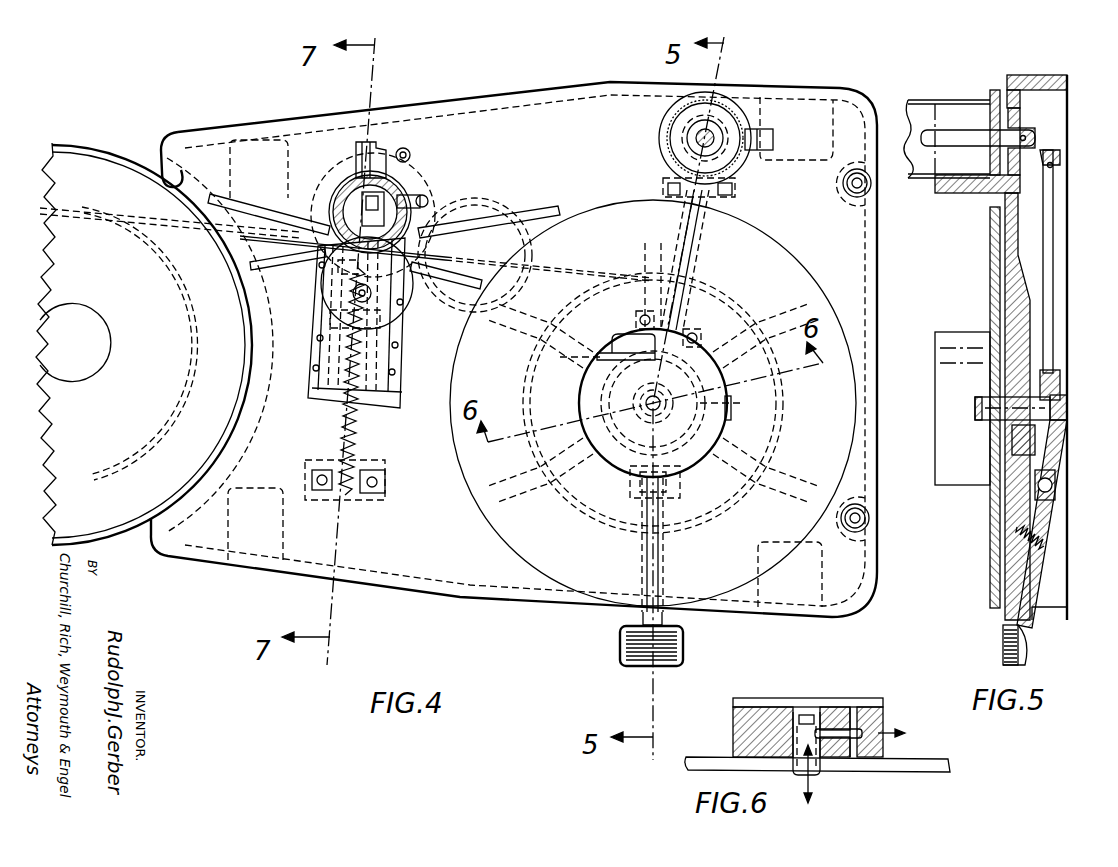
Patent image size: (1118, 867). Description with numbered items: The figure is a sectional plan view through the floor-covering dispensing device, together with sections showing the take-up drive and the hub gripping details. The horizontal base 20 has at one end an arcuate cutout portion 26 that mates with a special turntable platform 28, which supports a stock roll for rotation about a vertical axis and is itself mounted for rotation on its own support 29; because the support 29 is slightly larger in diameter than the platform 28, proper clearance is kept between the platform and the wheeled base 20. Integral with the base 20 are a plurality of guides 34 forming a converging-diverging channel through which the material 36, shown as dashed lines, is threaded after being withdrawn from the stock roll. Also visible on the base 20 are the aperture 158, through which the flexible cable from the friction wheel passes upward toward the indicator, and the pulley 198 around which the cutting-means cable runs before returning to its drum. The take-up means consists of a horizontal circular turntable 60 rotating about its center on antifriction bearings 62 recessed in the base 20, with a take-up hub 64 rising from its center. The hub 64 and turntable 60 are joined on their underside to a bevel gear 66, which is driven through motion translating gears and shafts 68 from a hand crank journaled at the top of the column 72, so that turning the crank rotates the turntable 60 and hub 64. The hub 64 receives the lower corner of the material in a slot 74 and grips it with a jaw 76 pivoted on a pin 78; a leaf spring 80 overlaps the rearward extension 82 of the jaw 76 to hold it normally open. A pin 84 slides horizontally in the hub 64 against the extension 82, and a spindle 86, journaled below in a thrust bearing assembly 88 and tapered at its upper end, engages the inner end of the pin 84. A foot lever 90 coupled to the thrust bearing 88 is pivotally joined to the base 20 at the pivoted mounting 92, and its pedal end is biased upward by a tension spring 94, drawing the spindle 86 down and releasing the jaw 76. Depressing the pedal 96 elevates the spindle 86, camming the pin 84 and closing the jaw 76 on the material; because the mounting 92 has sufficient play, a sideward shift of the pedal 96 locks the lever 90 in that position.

In FIG. 4, the base 20 is at (200, 563).
In FIG. 4, the arcuate cutout portion 26 is at (165, 176).
In FIG. 4, the platform 28 is at (112, 153).
In FIG. 4, the support 29 is at (88, 146).
In FIG. 4, the guides 34 is at (241, 203).
In FIG. 4, the material 36 is at (214, 232).
In FIG. 4, the aperture 158 is at (428, 196).
In FIG. 4, the pulley 198 is at (410, 164).
In FIG. 4, the turntable 60 is at (753, 250).
In FIG. 5, the turntable 60 is at (990, 565).
In FIG. 6, the turntable 60 is at (920, 760).
In FIG. 5, the antifriction bearings 62 is at (988, 495).
In FIG. 5, the take-up hub 64 is at (944, 461).
In FIG. 6, the take-up hub 64 is at (733, 730).
In FIG. 5, the bevel gear 66 is at (1040, 386).
In FIG. 5, the motion translating gears and shafts 68 is at (957, 122).
In FIG. 4, the column 72 is at (728, 108).
In FIG. 5, the column 72 is at (926, 100).
In FIG. 4, the slot 74 is at (607, 348).
In FIG. 4, the jaw 76 is at (636, 346).
In FIG. 4, the pin 78 is at (700, 338).
In FIG. 4, the leaf spring 80 is at (769, 447).
In FIG. 4, the rearward extension 82 is at (766, 410).
In FIG. 6, the rearward extension 82 is at (872, 722).
In FIG. 6, the pin 84 is at (831, 712).
In FIG. 5, the spindle 86 is at (1036, 430).
In FIG. 6, the spindle 86 is at (797, 738).
In FIG. 5, the thrust bearing assembly 88 is at (1066, 410).
In FIG. 4, the foot lever 90 is at (664, 569).
In FIG. 5, the foot lever 90 is at (1040, 563).
In FIG. 4, the pivoted mounting 92 is at (613, 522).
In FIG. 5, the pivoted mounting 92 is at (1056, 490).
In FIG. 5, the tension spring 94 is at (1043, 526).
In FIG. 4, the pedal 96 is at (620, 648).
In FIG. 5, the pedal 96 is at (1003, 652).